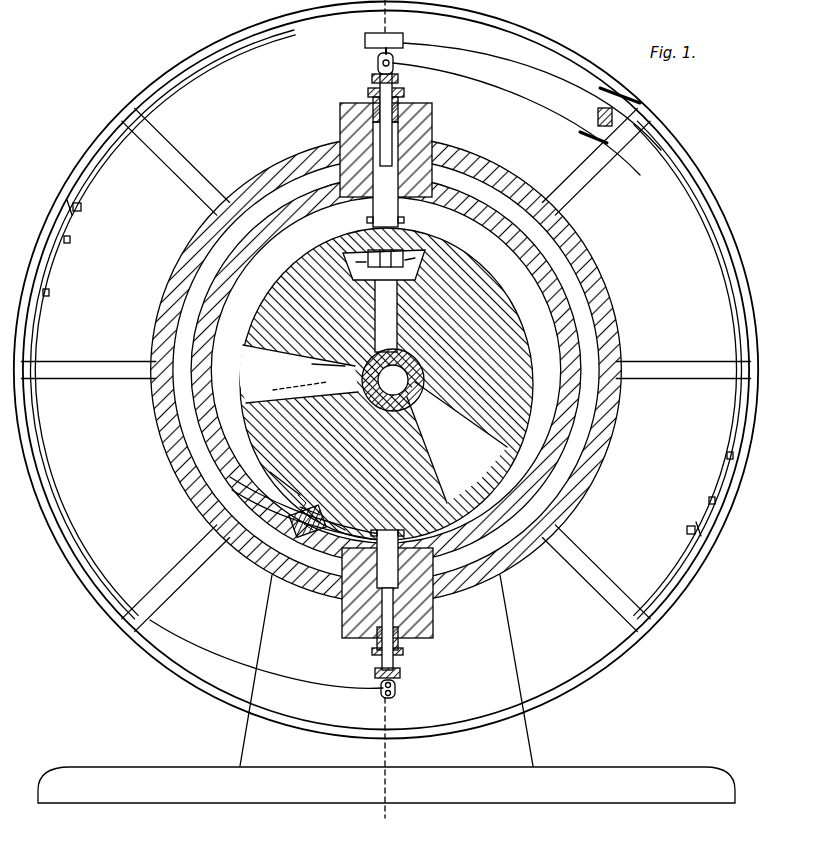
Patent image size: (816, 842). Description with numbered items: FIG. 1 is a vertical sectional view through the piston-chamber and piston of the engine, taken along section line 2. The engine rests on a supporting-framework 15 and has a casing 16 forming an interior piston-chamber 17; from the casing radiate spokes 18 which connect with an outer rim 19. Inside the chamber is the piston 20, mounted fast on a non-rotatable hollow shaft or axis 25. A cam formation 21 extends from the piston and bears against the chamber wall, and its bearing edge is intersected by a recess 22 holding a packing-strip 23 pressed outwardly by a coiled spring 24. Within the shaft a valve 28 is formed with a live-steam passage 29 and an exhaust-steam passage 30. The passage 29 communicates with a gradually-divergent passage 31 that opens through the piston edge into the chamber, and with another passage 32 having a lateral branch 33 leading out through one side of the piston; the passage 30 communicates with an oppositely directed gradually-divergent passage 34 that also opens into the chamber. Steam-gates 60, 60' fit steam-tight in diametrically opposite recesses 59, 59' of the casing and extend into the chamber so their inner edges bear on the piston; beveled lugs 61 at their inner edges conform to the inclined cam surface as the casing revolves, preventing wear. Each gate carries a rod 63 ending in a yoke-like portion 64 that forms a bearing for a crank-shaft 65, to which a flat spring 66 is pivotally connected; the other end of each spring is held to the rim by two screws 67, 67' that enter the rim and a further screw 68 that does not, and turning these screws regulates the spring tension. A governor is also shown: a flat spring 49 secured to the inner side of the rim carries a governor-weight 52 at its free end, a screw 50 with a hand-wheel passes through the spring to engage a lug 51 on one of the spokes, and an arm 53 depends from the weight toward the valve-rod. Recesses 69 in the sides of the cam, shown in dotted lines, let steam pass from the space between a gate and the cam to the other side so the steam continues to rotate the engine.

The section line 2 is at (431, 419).
The supporting-framework 15 is at (525, 731).
The casing 16 is at (604, 470).
The piston-chamber 17 is at (386, 370).
The spokes 18 is at (182, 158).
The outer rim 19 is at (667, 598).
The piston 20 is at (396, 384).
The cam formation 21 is at (300, 507).
The recess 22 is at (270, 472).
The packing-strip 23 is at (290, 538).
The coiled spring 24 is at (330, 522).
The shaft or axis 25 is at (300, 388).
The valve 28 is at (317, 365).
The live-steam passage 29 is at (390, 380).
The exhaust-steam passage 30 is at (393, 380).
The gradually-divergent passage 31 is at (299, 374).
The passage 32 is at (386, 315).
The lateral branch 33 is at (420, 258).
The gradually-divergent passage 34 is at (457, 442).
The flat spring 49 is at (670, 170).
The screw 50 is at (600, 112).
The lug 51 is at (590, 141).
The governor-weight 52 is at (365, 42).
The arm 53 is at (383, 51).
The chamber or recess 59 is at (406, 150).
The chamber or recess 59' is at (411, 593).
The steam-gate 60 is at (386, 157).
The steam-gate 60' is at (387, 592).
The beveled lugs 61 is at (404, 533).
The rod 63 is at (390, 128).
The yoke-like portion 64 is at (372, 78).
The crank-shaft 65 is at (395, 64).
The flat spring 66 is at (72, 514).
The screw 67 is at (388, 372).
The screw 67' is at (389, 369).
The screw 68 is at (81, 207).
The recess 69 is at (200, 482).